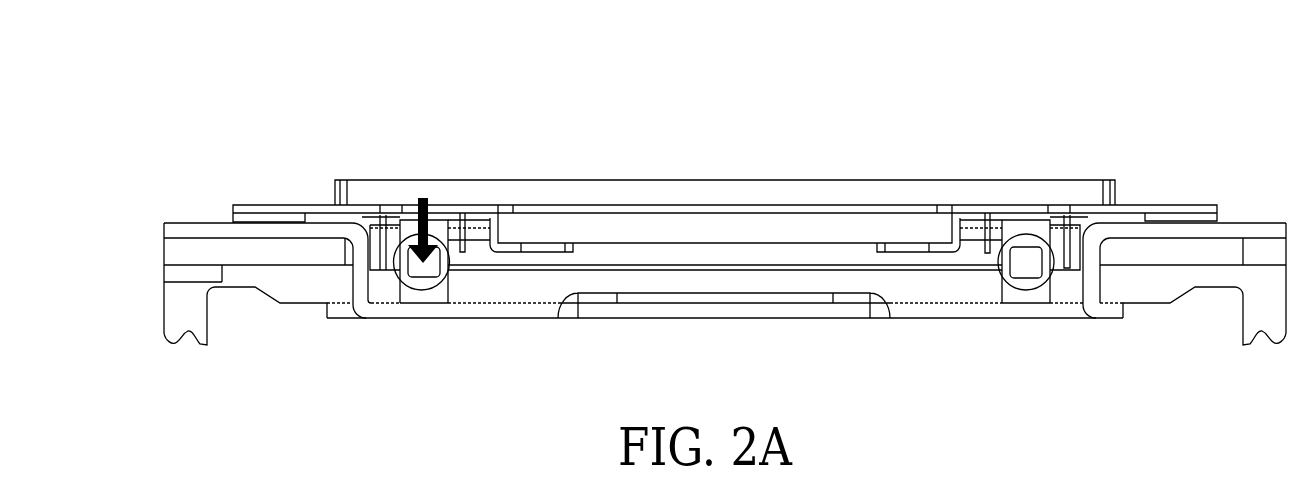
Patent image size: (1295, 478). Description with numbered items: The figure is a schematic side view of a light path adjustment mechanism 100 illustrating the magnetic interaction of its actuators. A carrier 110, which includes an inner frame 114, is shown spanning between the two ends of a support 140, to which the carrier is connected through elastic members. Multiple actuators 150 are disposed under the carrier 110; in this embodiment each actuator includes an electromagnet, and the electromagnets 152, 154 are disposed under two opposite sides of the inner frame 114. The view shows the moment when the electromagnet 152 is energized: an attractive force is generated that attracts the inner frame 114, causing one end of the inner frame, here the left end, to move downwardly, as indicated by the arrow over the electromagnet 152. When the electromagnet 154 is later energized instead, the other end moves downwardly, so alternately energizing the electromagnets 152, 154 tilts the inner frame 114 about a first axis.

The light path adjustment mechanism 100 is at (150, 29).
The carrier 110 is at (725, 165).
The inner frame 114 is at (640, 192).
The support 140 is at (211, 233).
The actuators 150 is at (748, 328).
The electromagnet 152 is at (418, 268).
The electromagnet 154 is at (1023, 268).